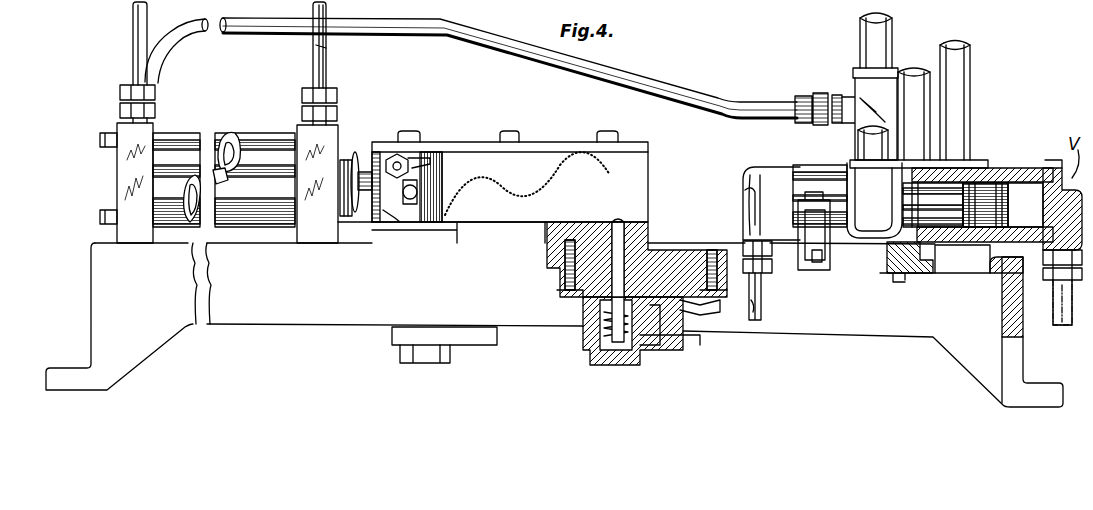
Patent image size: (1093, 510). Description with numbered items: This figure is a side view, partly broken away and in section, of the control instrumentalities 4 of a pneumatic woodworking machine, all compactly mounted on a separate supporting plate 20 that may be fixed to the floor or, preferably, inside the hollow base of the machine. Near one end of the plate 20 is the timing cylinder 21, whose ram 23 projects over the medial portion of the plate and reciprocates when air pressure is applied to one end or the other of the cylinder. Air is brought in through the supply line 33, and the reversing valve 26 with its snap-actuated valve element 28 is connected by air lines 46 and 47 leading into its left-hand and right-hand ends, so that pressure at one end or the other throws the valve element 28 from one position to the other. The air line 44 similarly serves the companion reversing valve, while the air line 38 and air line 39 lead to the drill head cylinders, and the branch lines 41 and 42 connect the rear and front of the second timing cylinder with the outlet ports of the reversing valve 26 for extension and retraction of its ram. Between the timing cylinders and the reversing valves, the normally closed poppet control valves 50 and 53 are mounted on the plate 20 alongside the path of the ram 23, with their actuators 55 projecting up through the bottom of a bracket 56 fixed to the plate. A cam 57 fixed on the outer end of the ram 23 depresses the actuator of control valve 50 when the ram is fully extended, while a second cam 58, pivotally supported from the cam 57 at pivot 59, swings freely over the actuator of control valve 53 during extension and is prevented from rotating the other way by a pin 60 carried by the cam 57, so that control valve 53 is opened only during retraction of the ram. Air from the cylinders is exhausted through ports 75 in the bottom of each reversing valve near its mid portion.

The control instrumentalities 4 is at (468, 107).
The supporting plate 20 is at (851, 322).
The timing cylinder 21 is at (230, 140).
The ram 23 is at (358, 170).
The reversing valve 26 is at (1012, 172).
The valve element 28 is at (998, 175).
The air supply line 33 is at (905, 115).
The air line 38 is at (692, 86).
The air line 39 is at (307, 70).
The branch line 41 is at (130, 27).
The branch line 42 is at (336, 43).
The air line 44 is at (770, 312).
The air line 46 is at (772, 284).
The air line 47 is at (1050, 300).
The control valve 50 is at (581, 352).
The control valve 53 is at (388, 352).
The actuator 55 is at (634, 241).
The bracket 56 is at (566, 140).
The cam 57 is at (450, 172).
The cam 58 is at (392, 212).
The pivot 59 is at (397, 147).
The pin 60 is at (416, 206).
The port 75 is at (919, 279).